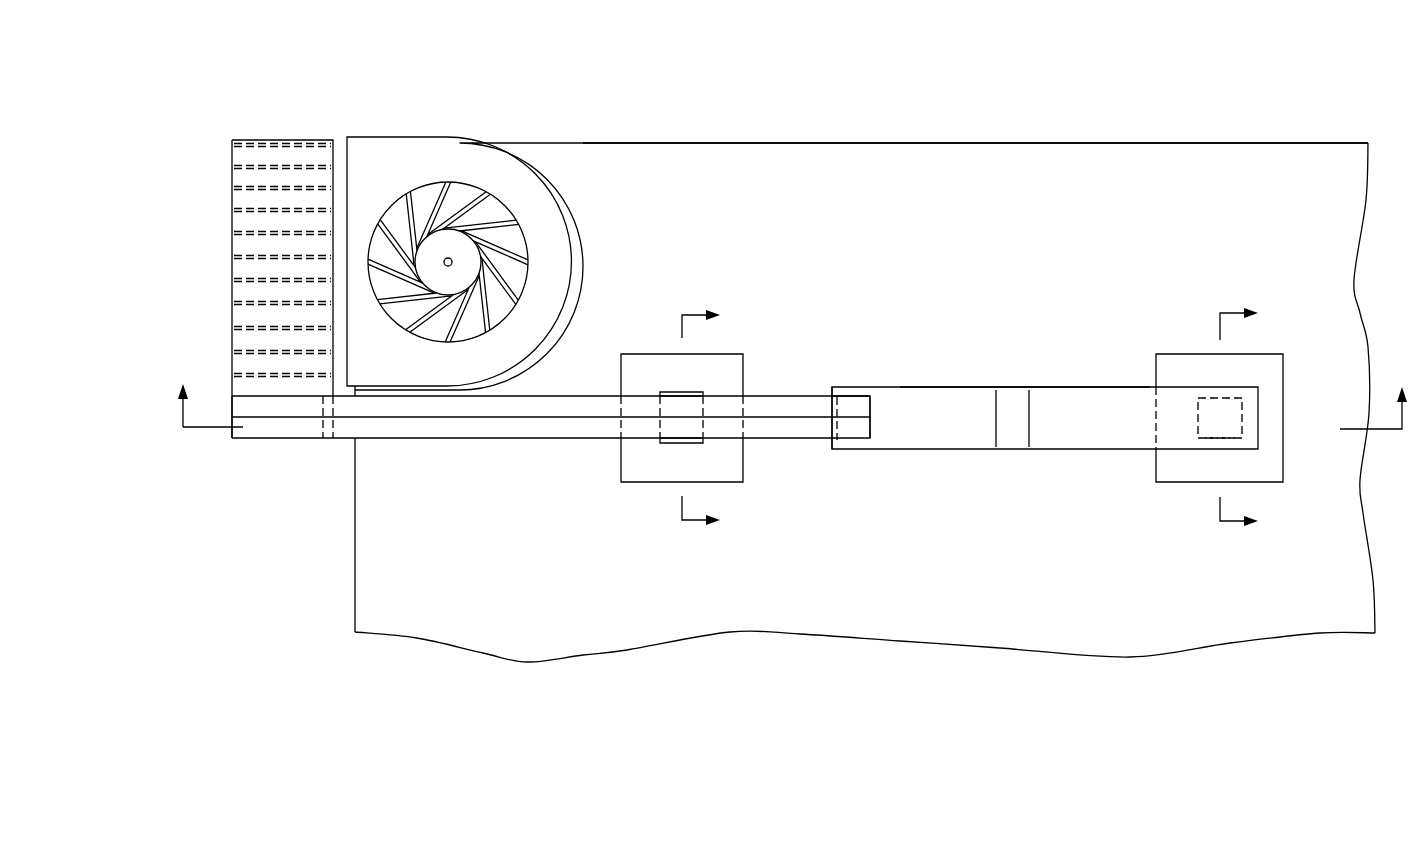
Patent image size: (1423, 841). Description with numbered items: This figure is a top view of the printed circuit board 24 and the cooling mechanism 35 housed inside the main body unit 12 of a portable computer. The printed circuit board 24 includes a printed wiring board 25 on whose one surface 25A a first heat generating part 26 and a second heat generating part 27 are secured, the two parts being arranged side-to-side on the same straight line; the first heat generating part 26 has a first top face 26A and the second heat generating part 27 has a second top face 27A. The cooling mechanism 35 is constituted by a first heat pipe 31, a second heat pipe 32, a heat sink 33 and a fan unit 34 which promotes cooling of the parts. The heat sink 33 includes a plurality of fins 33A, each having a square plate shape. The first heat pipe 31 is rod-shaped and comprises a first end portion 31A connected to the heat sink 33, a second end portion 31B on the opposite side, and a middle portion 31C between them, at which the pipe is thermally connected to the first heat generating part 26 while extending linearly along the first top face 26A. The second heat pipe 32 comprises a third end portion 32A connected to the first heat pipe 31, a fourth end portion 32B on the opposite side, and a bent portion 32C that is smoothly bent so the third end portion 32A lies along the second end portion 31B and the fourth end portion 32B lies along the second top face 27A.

The main body unit 12 is at (1023, 93).
The printed circuit board 24 is at (928, 134).
The printed wiring board 25 is at (1176, 158).
The one surface 25A is at (1260, 175).
The first heat generating part 26 is at (744, 375).
The first top face 26A is at (672, 392).
The second heat generating part 27 is at (1154, 372).
The second top face 27A is at (1210, 442).
The first heat pipe 31 is at (494, 407).
The first end portion 31A is at (270, 407).
The second end portion 31B is at (861, 430).
The middle portion 31C is at (658, 405).
The second heat pipe 32 is at (958, 395).
The third end portion 32A is at (848, 447).
The fourth end portion 32B is at (1250, 412).
The bent portion 32C is at (1010, 435).
The heat sink 33 is at (283, 138).
The fins 33A is at (247, 300).
The fan unit 34 is at (423, 150).
The cooling mechanism 35 is at (1038, 346).